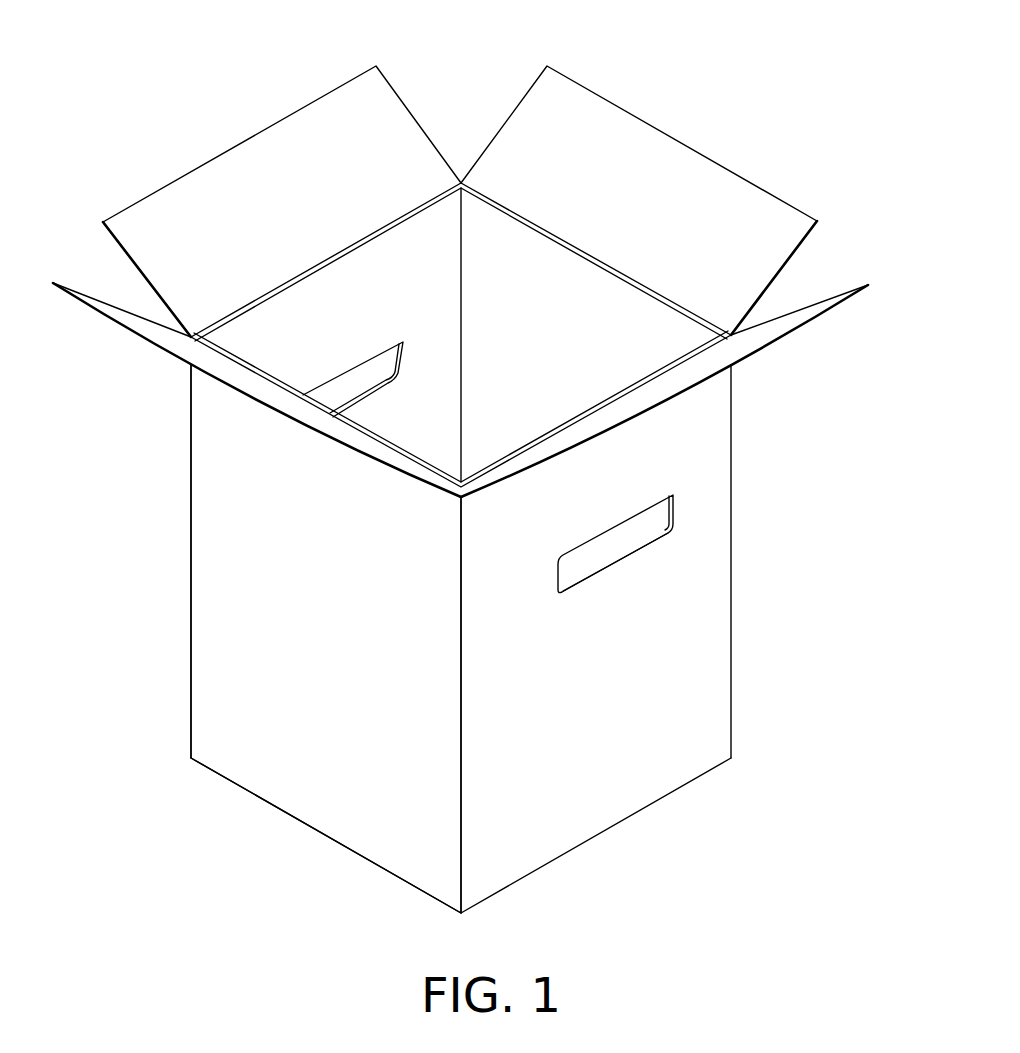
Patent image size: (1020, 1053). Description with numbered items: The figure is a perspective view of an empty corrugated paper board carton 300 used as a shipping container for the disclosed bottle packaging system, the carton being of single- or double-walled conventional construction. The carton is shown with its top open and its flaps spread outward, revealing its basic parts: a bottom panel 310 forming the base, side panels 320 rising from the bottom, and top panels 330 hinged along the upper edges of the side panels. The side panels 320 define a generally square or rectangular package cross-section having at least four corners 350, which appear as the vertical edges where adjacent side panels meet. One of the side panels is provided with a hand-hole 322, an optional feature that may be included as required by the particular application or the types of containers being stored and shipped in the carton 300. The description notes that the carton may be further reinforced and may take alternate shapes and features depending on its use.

The corrugated paper board carton 300 is at (700, 109).
The bottom panel 310 is at (315, 828).
The side panels 320 is at (213, 632).
The hand-holes 322 is at (652, 520).
The top panel 330 is at (422, 133).
The corners 350 is at (190, 465).